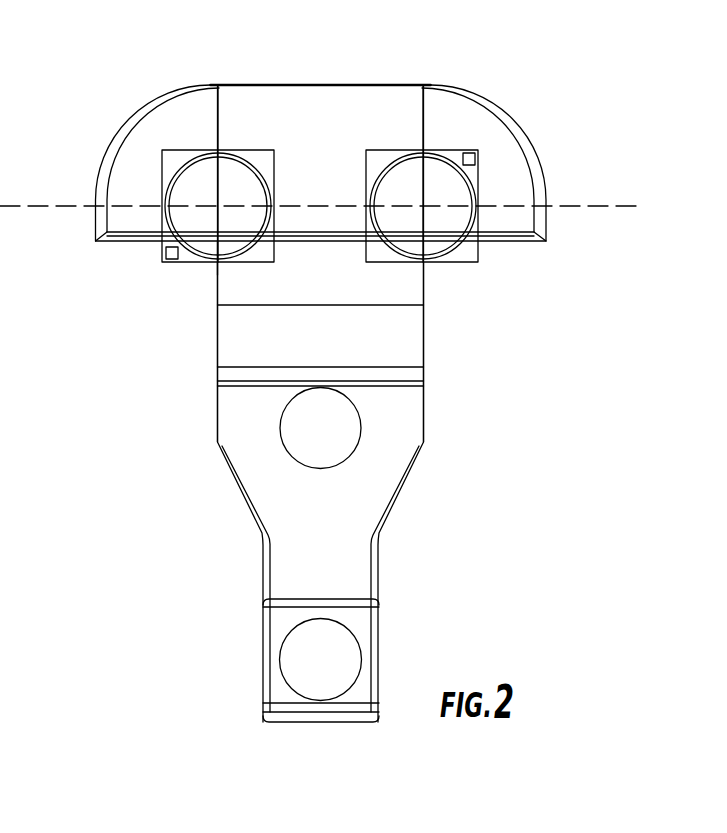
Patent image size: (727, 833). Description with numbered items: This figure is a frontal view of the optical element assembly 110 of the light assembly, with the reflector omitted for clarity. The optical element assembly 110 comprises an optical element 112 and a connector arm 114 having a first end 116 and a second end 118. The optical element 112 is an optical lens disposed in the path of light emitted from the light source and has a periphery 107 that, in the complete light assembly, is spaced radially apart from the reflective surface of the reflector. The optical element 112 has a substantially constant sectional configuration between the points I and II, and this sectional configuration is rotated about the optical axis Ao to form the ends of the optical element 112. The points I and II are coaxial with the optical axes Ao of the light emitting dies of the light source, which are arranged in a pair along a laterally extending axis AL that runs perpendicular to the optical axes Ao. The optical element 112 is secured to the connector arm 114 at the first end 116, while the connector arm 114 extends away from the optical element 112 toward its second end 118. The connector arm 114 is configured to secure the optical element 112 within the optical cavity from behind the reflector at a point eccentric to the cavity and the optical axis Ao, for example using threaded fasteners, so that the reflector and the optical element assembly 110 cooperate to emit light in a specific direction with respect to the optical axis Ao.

The optical element assembly 110 is at (456, 449).
The periphery 107 is at (315, 80).
The optical element 112 is at (385, 103).
The connector arm 114 is at (208, 445).
The first end 116 is at (212, 268).
The second end 118 is at (397, 604).
The point I is at (218, 206).
The point II is at (423, 206).
The optical axis Ao is at (218, 206).
The laterally extending axis AL is at (590, 206).